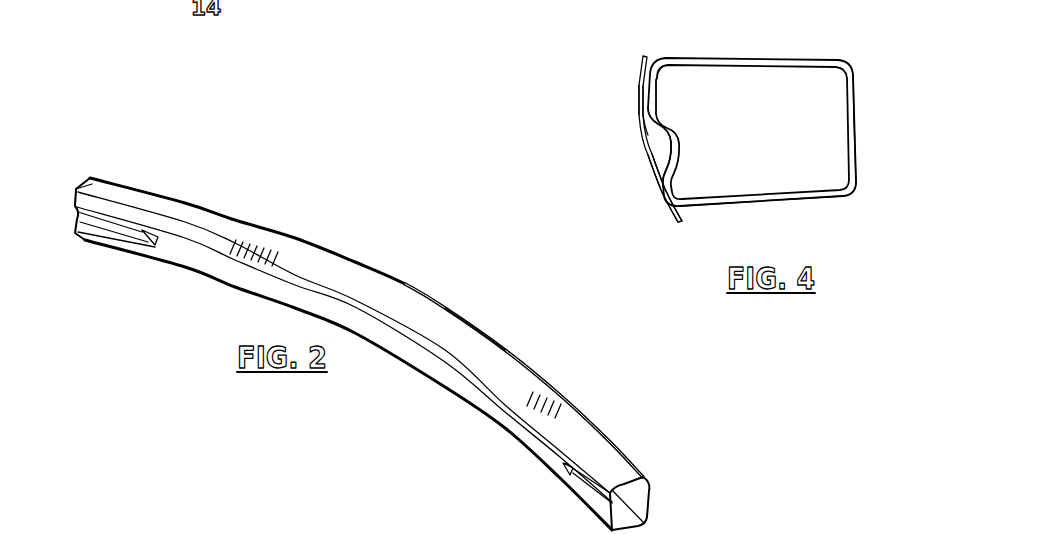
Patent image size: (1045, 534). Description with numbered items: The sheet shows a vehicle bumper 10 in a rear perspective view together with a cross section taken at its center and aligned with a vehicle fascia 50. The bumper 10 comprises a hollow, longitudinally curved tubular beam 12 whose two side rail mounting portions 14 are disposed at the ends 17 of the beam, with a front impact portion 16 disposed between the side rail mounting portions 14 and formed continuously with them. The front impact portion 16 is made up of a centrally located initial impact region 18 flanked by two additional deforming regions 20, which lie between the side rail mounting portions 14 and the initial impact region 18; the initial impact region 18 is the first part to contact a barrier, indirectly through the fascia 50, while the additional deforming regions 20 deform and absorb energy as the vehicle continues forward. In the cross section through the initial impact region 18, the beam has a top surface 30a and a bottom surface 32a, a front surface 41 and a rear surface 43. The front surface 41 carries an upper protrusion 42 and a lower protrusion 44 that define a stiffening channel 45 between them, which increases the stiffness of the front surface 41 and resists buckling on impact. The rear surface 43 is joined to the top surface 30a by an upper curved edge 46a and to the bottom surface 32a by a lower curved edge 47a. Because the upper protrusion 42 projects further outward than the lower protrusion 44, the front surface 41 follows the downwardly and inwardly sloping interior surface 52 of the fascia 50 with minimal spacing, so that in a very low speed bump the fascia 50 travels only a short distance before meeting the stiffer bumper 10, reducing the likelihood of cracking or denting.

In FIG. 2, the bumper 10 is at (331, 175).
In FIG. 2, the tubular beam 12 is at (148, 191).
In FIG. 2, the side rail mounting portions 14 is at (130, 147).
In FIG. 2, the front impact portion 16 is at (218, 196).
In FIG. 2, the ends 17 is at (111, 166).
In FIG. 2, the initial impact region 18 is at (432, 242).
In FIG. 4, the initial impact region 18 is at (878, 122).
In FIG. 2, the additional deforming regions 20 is at (243, 174).
In FIG. 4, the top surface 30a is at (757, 50).
In FIG. 4, the bottom surface 32a is at (760, 210).
In FIG. 4, the front surface 41 is at (647, 127).
In FIG. 4, the upper protrusion 42 is at (638, 97).
In FIG. 4, the rear surface 43 is at (876, 90).
In FIG. 4, the lower protrusion 44 is at (658, 182).
In FIG. 4, the stiffening channel 45 is at (663, 141).
In FIG. 4, the upper curved edge 46a is at (851, 63).
In FIG. 4, the lower curved edge 47a is at (854, 197).
In FIG. 4, the fascia 50 is at (640, 76).
In FIG. 4, the interior surface 52 is at (655, 121).